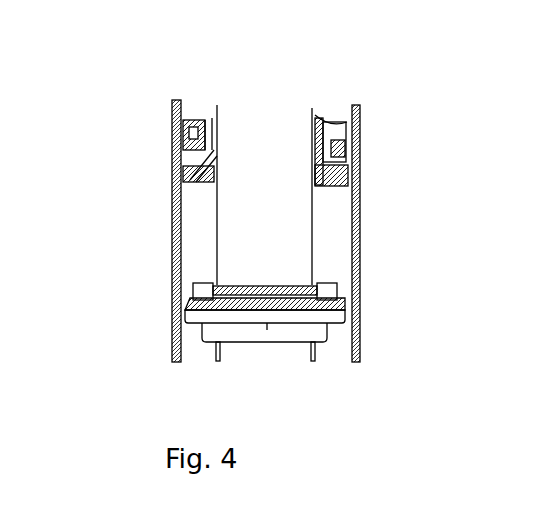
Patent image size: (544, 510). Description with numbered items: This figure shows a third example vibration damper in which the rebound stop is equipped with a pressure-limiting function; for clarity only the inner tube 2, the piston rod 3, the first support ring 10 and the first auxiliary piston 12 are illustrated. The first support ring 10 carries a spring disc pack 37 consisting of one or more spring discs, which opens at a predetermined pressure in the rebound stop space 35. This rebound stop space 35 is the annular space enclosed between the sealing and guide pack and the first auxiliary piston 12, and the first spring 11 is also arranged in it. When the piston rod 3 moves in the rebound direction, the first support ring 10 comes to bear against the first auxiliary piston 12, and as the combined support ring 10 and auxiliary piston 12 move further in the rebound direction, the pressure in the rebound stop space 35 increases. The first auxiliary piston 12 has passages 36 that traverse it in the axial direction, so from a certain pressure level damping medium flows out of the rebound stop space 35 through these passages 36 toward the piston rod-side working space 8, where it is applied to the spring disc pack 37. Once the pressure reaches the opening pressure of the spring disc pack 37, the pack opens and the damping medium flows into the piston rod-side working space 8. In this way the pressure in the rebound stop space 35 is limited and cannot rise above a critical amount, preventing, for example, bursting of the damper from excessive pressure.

The inner tube 2 is at (182, 265).
The piston rod 3 is at (240, 191).
The piston rod-side working space 8 is at (335, 240).
The first support ring 10 is at (293, 317).
The first spring 11 is at (340, 125).
The first auxiliary piston 12 is at (325, 151).
The rebound stop space 35 is at (197, 113).
The passages 36 is at (322, 172).
The spring disc pack 37 is at (338, 300).